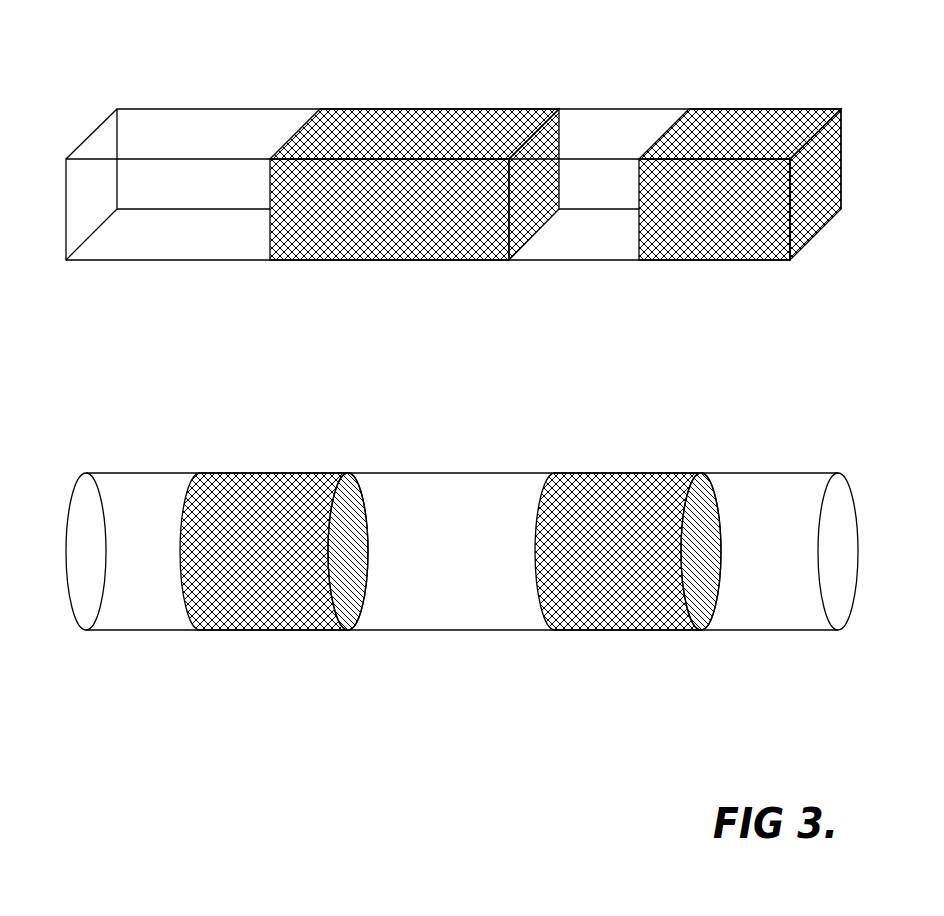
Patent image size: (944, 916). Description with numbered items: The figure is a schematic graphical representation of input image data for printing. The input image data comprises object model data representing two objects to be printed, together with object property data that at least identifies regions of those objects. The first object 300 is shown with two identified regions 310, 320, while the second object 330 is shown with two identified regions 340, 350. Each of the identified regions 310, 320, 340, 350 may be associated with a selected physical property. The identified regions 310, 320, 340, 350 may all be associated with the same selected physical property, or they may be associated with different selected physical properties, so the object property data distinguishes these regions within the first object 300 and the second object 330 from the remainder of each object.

The first object 300 is at (461, 175).
The identified region 310 is at (320, 257).
The identified region 320 is at (739, 222).
The second object 330 is at (462, 576).
The identified region 340 is at (323, 490).
The identified region 350 is at (628, 523).